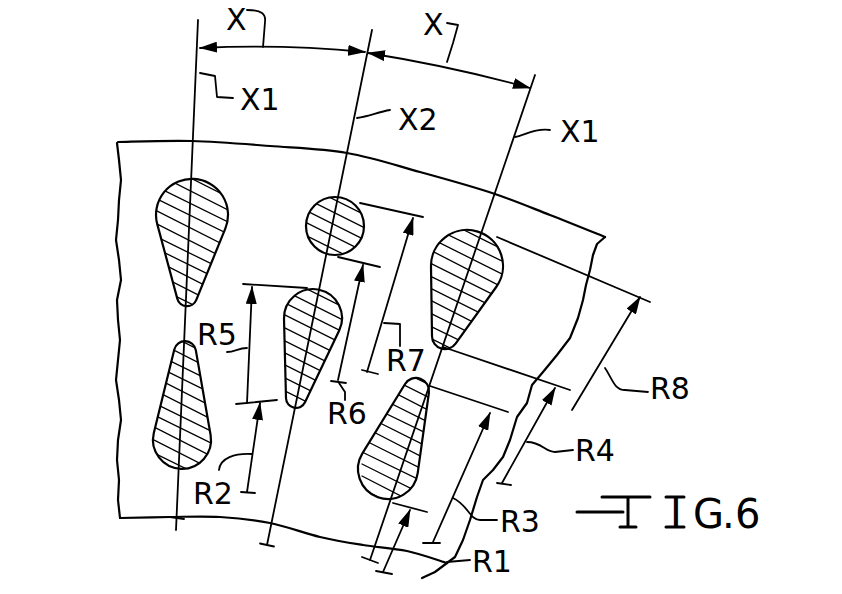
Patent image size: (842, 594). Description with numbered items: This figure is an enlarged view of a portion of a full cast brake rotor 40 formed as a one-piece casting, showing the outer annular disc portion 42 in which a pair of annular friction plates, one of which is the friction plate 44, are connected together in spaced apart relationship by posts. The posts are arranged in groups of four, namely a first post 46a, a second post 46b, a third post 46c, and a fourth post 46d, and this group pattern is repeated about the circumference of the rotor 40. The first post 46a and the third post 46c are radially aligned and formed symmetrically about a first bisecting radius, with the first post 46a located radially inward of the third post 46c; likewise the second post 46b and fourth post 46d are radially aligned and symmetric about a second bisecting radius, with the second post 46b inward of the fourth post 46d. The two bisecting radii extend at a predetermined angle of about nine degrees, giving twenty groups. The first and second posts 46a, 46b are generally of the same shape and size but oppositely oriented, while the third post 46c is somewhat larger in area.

The rotor 40 is at (602, 204).
The outer annular disc portion 42 is at (110, 320).
The annular friction plate 44 is at (119, 498).
The first post 46a is at (157, 403).
The second post 46b is at (316, 290).
The third post 46c is at (150, 238).
The fourth post 46d is at (314, 206).